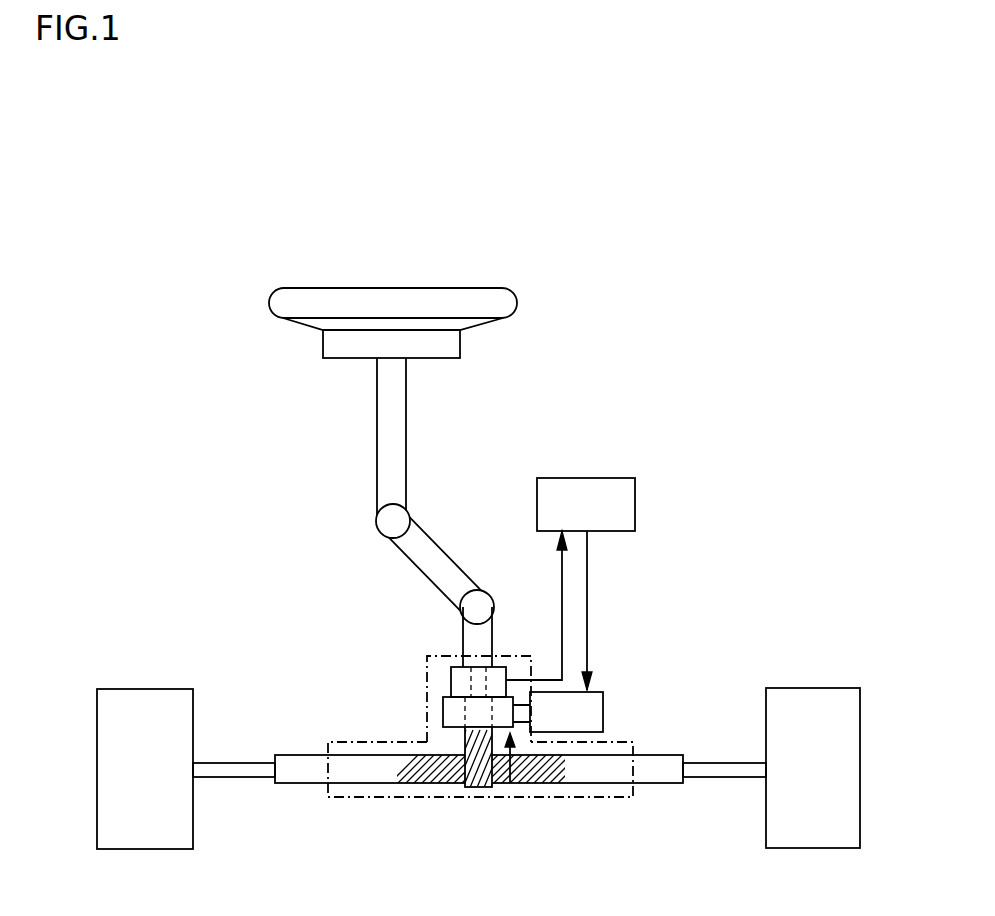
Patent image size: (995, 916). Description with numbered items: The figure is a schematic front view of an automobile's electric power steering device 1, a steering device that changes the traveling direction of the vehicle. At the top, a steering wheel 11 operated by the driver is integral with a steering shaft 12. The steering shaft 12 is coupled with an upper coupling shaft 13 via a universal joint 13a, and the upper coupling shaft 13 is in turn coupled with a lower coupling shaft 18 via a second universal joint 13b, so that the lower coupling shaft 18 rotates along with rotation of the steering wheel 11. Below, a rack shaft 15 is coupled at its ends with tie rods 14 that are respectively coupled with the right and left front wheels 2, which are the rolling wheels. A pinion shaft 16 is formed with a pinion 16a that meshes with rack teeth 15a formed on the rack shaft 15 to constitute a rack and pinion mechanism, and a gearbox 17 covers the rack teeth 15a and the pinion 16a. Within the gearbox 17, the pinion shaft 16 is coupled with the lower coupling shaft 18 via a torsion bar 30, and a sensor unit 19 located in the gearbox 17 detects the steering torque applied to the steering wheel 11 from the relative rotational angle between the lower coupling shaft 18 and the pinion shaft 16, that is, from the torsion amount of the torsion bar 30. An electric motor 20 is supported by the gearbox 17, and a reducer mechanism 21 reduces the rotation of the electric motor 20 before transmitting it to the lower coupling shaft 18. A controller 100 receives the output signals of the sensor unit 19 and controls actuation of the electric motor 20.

The electric power steering device 1 is at (170, 407).
The front wheels 2 is at (145, 689).
The steering wheel 11 is at (298, 287).
The steering shaft 12 is at (377, 481).
The upper coupling shaft 13 is at (425, 530).
The universal joint 13a is at (380, 526).
The universal joint 13b is at (465, 600).
The tie rods 14 is at (235, 763).
The rack shaft 15 is at (652, 784).
The rack teeth 15a is at (412, 777).
The pinion shaft 16 is at (460, 745).
The pinion 16a is at (480, 787).
The gearbox 17 is at (427, 663).
The lower coupling shaft 18 is at (463, 633).
The sensor unit 19 is at (497, 667).
The electric motor 20 is at (603, 712).
The reducer mechanism 21 is at (510, 768).
The torsion bar 30 is at (467, 680).
The controller 100 is at (635, 505).